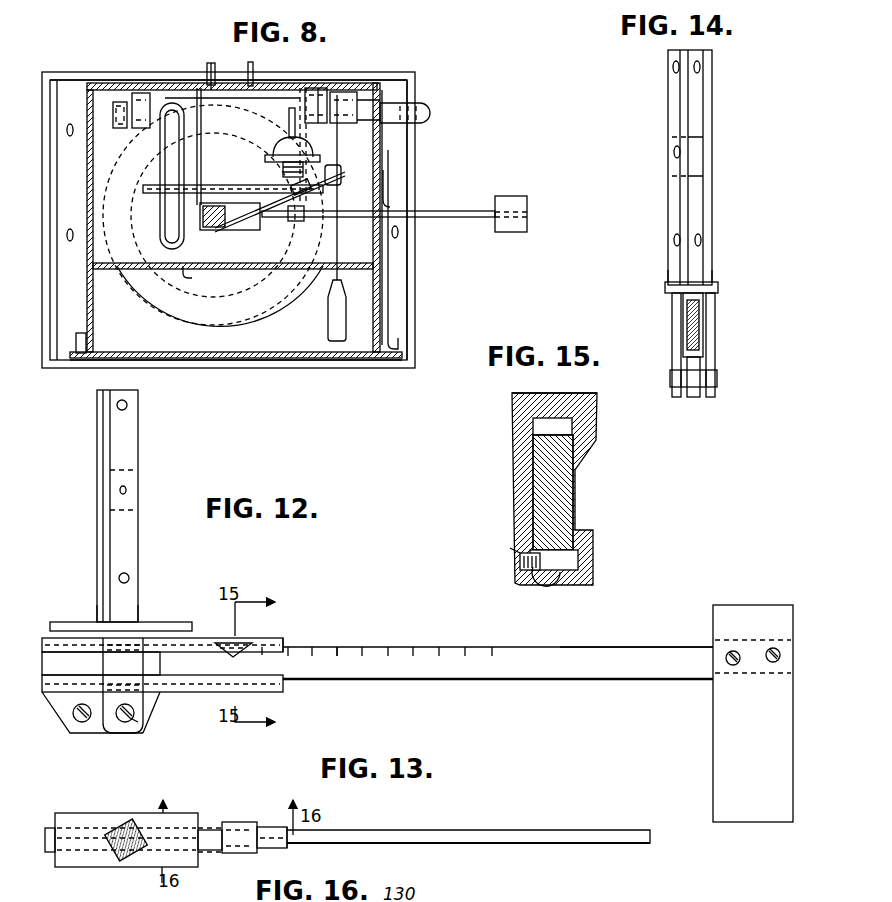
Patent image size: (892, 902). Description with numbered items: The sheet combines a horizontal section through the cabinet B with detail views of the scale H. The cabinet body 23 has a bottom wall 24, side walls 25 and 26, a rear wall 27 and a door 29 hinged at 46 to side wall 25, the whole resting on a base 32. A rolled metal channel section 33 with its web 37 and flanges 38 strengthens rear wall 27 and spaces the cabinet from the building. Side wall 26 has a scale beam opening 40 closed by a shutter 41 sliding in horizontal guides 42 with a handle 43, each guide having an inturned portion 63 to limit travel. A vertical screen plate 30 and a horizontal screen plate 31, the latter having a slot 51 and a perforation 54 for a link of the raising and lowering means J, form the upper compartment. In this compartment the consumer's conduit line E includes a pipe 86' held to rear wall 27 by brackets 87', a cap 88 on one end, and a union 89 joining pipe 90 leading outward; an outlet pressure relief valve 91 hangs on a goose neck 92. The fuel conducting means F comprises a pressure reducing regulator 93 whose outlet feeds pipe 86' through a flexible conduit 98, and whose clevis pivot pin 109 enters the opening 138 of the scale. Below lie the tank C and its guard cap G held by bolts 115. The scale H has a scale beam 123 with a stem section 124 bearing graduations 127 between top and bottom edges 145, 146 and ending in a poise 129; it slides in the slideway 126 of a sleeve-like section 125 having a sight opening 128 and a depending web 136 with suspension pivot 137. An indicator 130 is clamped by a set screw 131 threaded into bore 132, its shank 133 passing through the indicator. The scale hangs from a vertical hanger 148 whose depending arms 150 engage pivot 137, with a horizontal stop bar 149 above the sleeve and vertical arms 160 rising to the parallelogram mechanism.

In FIG. 8, the side wall 25 is at (70, 308).
In FIG. 8, the rear wall 27 is at (100, 82).
In FIG. 8, the base 32 is at (418, 325).
In FIG. 8, the horizontal screen wall or plate 31 is at (98, 192).
In FIG. 8, the bottom wall 24 is at (140, 352).
In FIG. 8, the door 29 is at (340, 360).
In FIG. 8, the side wall 26 is at (400, 300).
In FIG. 8, the shutter 41 is at (398, 265).
In FIG. 8, the handle 43 is at (410, 348).
In FIG. 8, the hinge 46 is at (80, 358).
In FIG. 8, the vertical screen wall or plate 30 is at (108, 269).
In FIG. 8, the fuel conducting means F is at (150, 213).
In FIG. 8, the tank C is at (255, 310).
In FIG. 8, the flexible conduit 98 is at (165, 130).
In FIG. 8, the pressure reducing regulator 93 is at (150, 190).
In FIG. 8, the cap 88 is at (120, 130).
In FIG. 8, the brackets 87' is at (242, 78).
In FIG. 8, the flanges 38 is at (205, 68).
In FIG. 8, the web 37 is at (212, 63).
In FIG. 8, the rolled metal section 33 is at (255, 82).
In FIG. 8, the body 23 is at (360, 100).
In FIG. 8, the union 89 is at (355, 92).
In FIG. 8, the cabinet B is at (408, 96).
In FIG. 8, the pipe 90 is at (430, 110).
In FIG. 8, the consumer's conduit line E is at (455, 129).
In FIG. 8, the pipe 86' is at (232, 146).
In FIG. 8, the goose neck 92 is at (282, 146).
In FIG. 8, the slot 51 is at (270, 141).
In FIG. 8, the outlet pressure relief valve 91 is at (277, 163).
In FIG. 8, the scale H is at (243, 223).
In FIG. 12, the scale H is at (155, 622).
In FIG. 13, the scale H is at (198, 828).
In FIG. 8, the perforation 54 is at (281, 187).
In FIG. 8, the scale beam opening 40 is at (400, 213).
In FIG. 8, the horizontal guides 42 is at (510, 196).
In FIG. 8, the inturned portion 63 is at (388, 200).
In FIG. 8, the raising and lowering means J is at (335, 280).
In FIG. 8, the bolts 115 is at (185, 272).
In FIG. 8, the guard or cap G is at (180, 272).
In FIG. 14, the vertical arms 160 is at (683, 100).
In FIG. 12, the vertical arms 160 is at (105, 440).
In FIG. 14, the horizontal stop bar 149 is at (718, 288).
In FIG. 12, the horizontal stop bar 149 is at (60, 622).
In FIG. 13, the horizontal stop bar 149 is at (60, 815).
In FIG. 14, the vertical hanger 148 is at (712, 282).
In FIG. 12, the vertical hanger 148 is at (140, 605).
In FIG. 13, the vertical hanger 148 is at (58, 868).
In FIG. 14, the depending arms 150 is at (681, 325).
In FIG. 12, the depending arms 150 is at (103, 664).
In FIG. 14, the stem section 124 is at (700, 328).
In FIG. 15, the stem section 124 is at (573, 492).
In FIG. 12, the stem section 124 is at (415, 650).
In FIG. 13, the stem section 124 is at (425, 832).
In FIG. 14, the suspension pivot 137 is at (717, 378).
In FIG. 12, the suspension pivot 137 is at (134, 720).
In FIG. 14, the depending web 136 is at (693, 397).
In FIG. 12, the depending web 136 is at (90, 722).
In FIG. 15, the slot or sight opening 128 is at (585, 517).
In FIG. 12, the slot or sight opening 128 is at (205, 638).
In FIG. 15, the indicator 130 is at (575, 393).
In FIG. 12, the indicator 130 is at (250, 638).
In FIG. 13, the indicator 130 is at (245, 822).
In FIG. 15, the slideway 126 is at (572, 426).
In FIG. 13, the slideway 126 is at (186, 893).
In FIG. 15, the sleeve-like section 125 is at (593, 582).
In FIG. 12, the sleeve-like section 125 is at (180, 692).
In FIG. 13, the sleeve-like section 125 is at (270, 827).
In FIG. 15, the bore 132 is at (520, 570).
In FIG. 15, the set screw 131 is at (520, 558).
In FIG. 15, the shank 133 is at (550, 582).
In FIG. 12, the opening 138 is at (90, 735).
In FIG. 12, the pivot pin 109 is at (76, 718).
In FIG. 12, the scale beam 123 is at (285, 645).
In FIG. 13, the scale beam 123 is at (285, 848).
In FIG. 12, the graduations and other indicia 127 is at (340, 647).
In FIG. 12, the top edge 145 is at (600, 635).
In FIG. 12, the bottom edge 146 is at (520, 681).
In FIG. 12, the counterweight or poise 129 is at (713, 730).